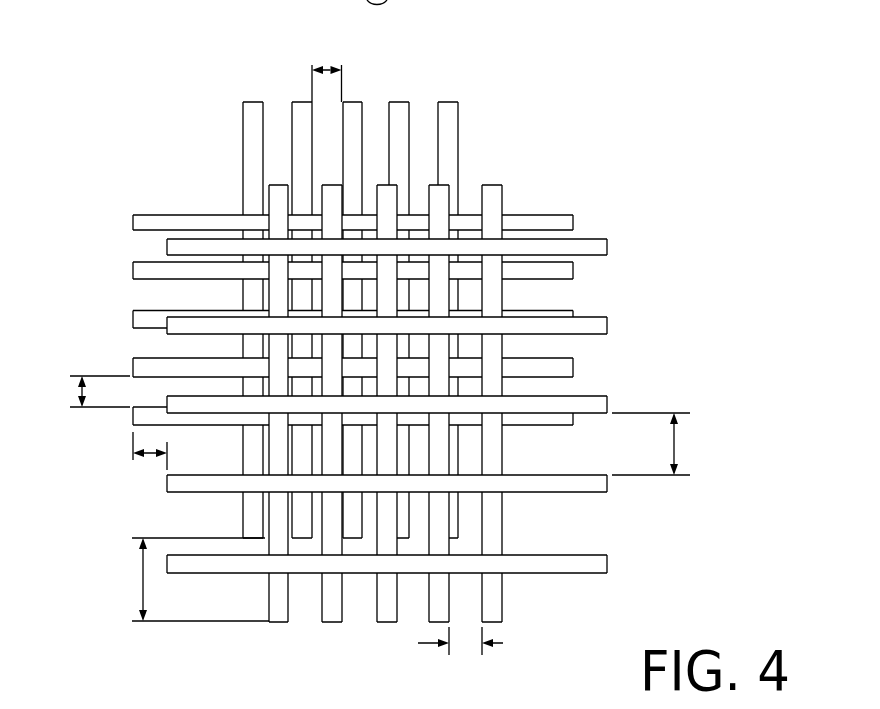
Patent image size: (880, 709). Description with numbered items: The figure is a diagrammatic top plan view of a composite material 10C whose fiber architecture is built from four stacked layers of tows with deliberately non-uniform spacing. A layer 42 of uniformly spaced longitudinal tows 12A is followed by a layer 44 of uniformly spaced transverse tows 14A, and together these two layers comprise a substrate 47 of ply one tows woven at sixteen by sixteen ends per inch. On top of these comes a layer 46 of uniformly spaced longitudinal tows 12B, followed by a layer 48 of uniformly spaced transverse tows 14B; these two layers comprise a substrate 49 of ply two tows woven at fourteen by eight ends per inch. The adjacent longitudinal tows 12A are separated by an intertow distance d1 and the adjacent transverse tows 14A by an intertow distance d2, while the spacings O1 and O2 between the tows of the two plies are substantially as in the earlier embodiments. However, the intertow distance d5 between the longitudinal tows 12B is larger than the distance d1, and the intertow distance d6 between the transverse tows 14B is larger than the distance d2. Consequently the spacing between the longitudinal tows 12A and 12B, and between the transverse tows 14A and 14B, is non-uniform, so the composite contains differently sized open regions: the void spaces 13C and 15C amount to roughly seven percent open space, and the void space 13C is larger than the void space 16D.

The composite material 10C is at (369, 351).
The longitudinal tows 12A is at (253, 102).
The longitudinal tows 12B is at (493, 185).
The void space 13C is at (370, 532).
The transverse tows 14A is at (133, 218).
The transverse tows 14B is at (607, 558).
The void space 15C is at (552, 297).
The void space 16D is at (419, 384).
The layer 42 is at (461, 74).
The layer 44 is at (565, 199).
The layer 46 is at (535, 598).
The substrate 47 is at (602, 518).
The layer 48 is at (629, 322).
The substrate 49 is at (530, 177).
The intertow distance d1 is at (330, 65).
The intertow distance d2 is at (80, 392).
The intertow distance d5 is at (423, 645).
The intertow distance d6 is at (678, 440).
The spacing O1 is at (143, 580).
The spacing O2 is at (150, 455).